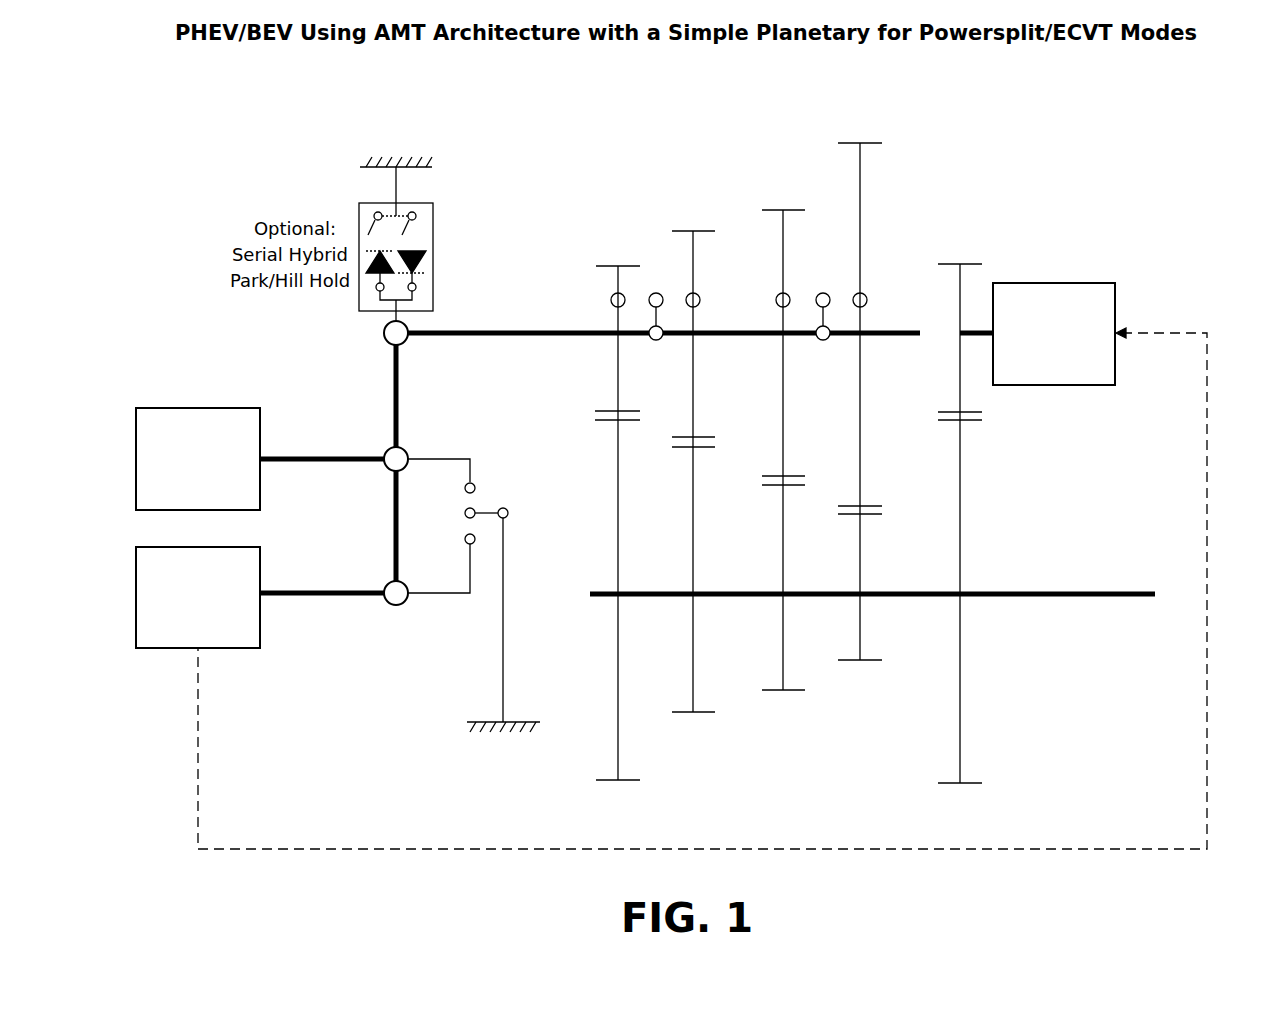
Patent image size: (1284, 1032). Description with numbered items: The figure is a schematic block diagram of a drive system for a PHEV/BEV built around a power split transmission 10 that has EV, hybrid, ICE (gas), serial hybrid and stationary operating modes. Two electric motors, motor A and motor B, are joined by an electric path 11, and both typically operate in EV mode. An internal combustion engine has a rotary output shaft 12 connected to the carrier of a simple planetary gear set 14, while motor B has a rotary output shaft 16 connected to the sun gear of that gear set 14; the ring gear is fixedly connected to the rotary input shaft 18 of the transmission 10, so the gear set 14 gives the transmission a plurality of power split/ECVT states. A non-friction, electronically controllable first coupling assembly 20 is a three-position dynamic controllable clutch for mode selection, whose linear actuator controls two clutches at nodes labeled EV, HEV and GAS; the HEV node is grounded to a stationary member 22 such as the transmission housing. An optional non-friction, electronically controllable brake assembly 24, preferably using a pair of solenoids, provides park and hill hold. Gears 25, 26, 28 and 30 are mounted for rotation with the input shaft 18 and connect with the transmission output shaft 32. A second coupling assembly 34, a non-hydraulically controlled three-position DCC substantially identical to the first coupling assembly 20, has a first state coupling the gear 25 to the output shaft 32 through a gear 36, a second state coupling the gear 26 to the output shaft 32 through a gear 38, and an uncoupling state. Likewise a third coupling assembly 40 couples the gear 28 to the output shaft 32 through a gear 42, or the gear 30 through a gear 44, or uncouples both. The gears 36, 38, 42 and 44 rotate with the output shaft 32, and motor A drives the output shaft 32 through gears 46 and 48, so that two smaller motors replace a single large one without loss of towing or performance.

The transmission 10 is at (790, 110).
The electric path 11 is at (1210, 558).
The rotary output shaft 12 is at (345, 455).
The simple planetary gear set 14 is at (398, 622).
The rotary output shaft 16 is at (345, 590).
The rotary input shaft 18 is at (573, 330).
The first coupling assembly 20 is at (434, 438).
The stationary member 22 is at (384, 165).
The brake assembly 24 is at (440, 228).
The gear 25 is at (612, 404).
The gear 26 is at (696, 405).
The gear 28 is at (786, 430).
The gear 30 is at (862, 458).
The transmission output shaft 32 is at (1053, 598).
The second coupling assembly 34 is at (661, 200).
The gear 36 is at (612, 513).
The gear 38 is at (696, 553).
The third coupling assembly 40 is at (822, 220).
The gear 42 is at (786, 577).
The gear 44 is at (862, 578).
The gear 46 is at (962, 277).
The gear 48 is at (962, 523).